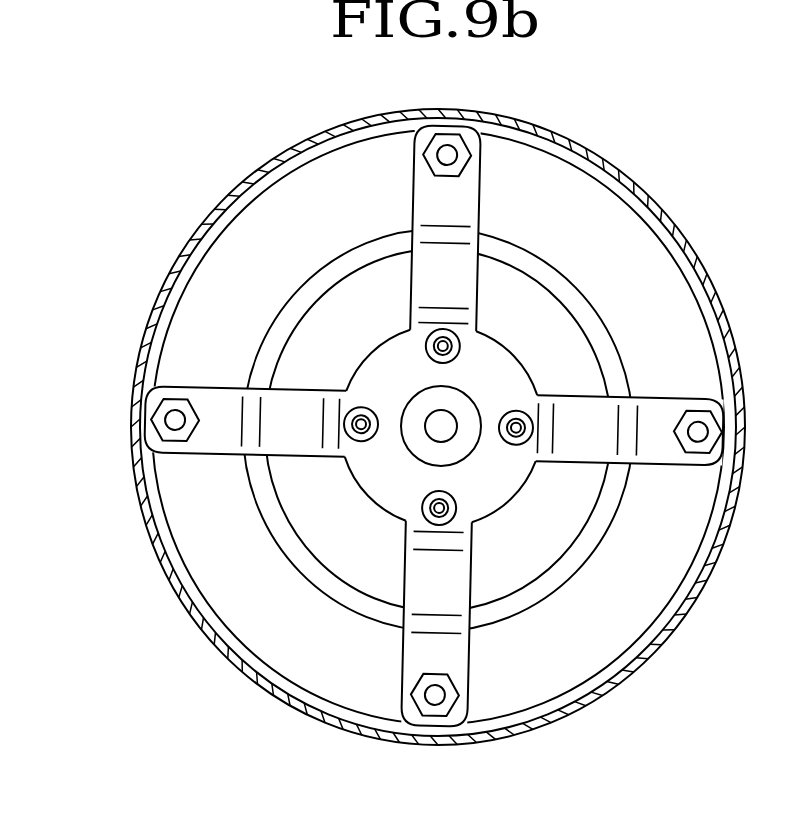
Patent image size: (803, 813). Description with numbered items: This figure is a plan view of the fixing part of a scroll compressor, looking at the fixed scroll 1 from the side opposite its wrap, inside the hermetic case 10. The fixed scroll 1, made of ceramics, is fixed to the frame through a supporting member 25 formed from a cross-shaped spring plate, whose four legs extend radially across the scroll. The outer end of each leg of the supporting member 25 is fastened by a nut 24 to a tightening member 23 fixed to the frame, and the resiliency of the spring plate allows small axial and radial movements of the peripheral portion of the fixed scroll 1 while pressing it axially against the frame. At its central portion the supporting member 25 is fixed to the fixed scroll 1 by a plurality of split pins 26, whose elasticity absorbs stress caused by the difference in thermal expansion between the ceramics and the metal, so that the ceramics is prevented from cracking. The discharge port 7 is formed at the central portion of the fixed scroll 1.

The fixed scroll 1 is at (255, 632).
The discharge port 7 is at (445, 421).
The hermetic case 10 is at (150, 533).
The tightening member 23 is at (170, 421).
The nut 24 is at (157, 406).
The supporting member 25 is at (217, 428).
The split pin 26 is at (360, 432).